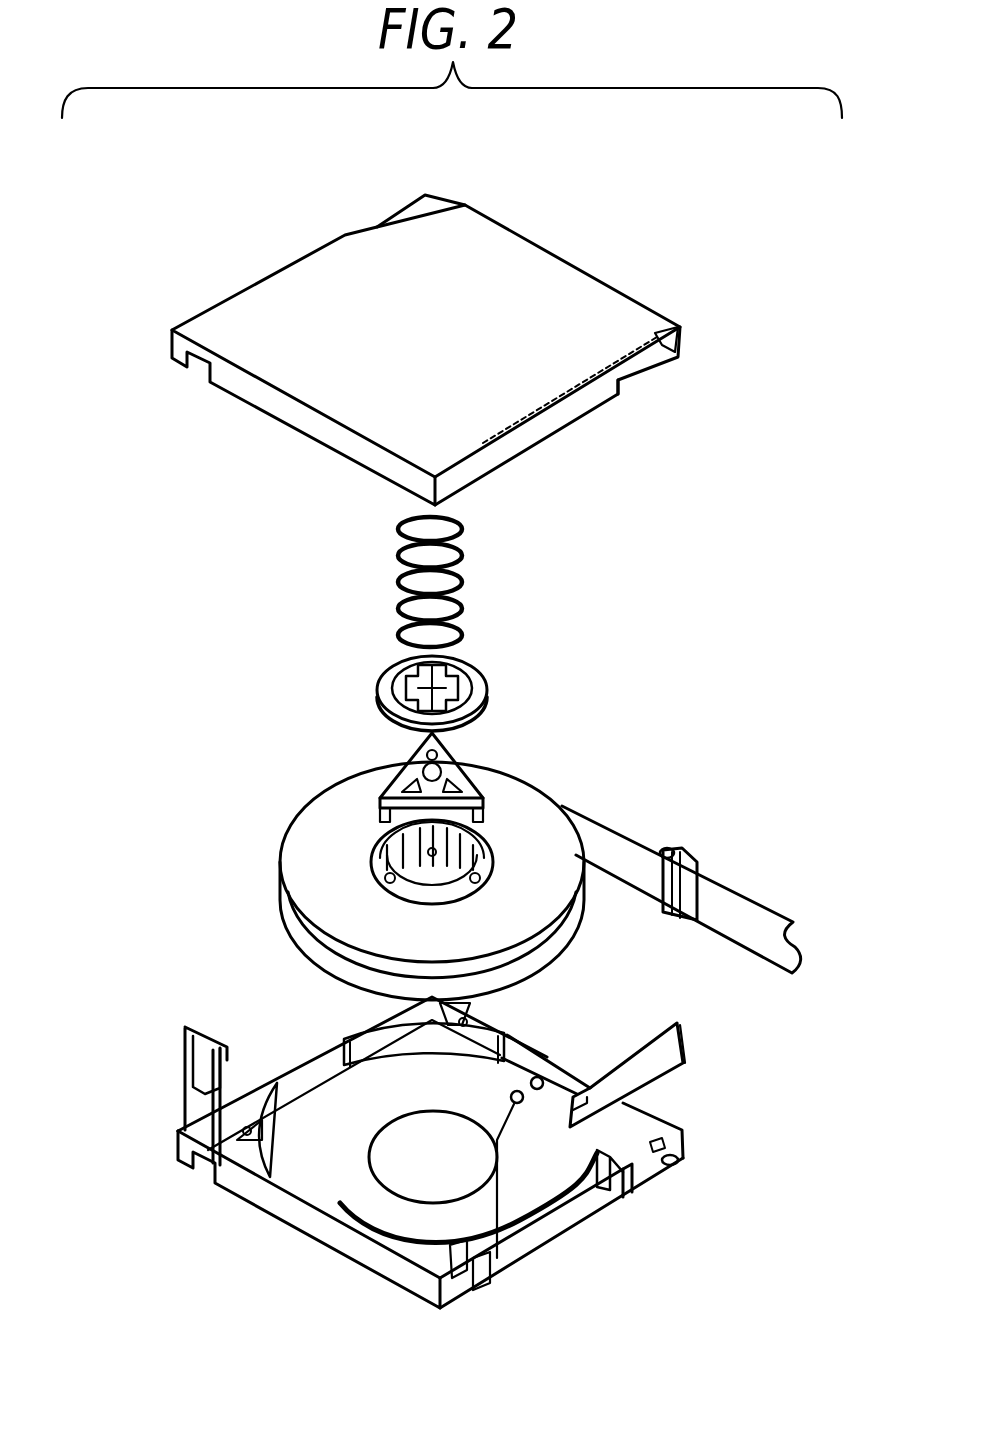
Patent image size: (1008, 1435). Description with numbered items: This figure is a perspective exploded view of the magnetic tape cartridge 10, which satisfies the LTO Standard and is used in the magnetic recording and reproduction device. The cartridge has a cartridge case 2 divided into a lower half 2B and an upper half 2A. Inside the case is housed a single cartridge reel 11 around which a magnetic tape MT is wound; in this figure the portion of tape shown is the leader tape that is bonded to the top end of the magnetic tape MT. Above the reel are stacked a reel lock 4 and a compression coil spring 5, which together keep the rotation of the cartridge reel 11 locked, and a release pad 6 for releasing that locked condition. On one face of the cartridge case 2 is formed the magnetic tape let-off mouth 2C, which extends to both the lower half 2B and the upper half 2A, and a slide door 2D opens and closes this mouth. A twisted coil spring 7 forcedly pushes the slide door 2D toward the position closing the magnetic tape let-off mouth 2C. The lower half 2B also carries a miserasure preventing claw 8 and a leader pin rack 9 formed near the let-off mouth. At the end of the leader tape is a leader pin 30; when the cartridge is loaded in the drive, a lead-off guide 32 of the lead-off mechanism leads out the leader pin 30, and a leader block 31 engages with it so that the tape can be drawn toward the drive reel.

The cartridge case 2 is at (153, 645).
The upper half 2A is at (275, 423).
The lower half 2B is at (300, 1060).
The magnetic tape let-off mouth 2C is at (618, 380).
The slide door 2D is at (663, 1033).
The magnetic tape cartridge 10 is at (513, 215).
The compression coil spring 5 is at (462, 580).
The reel brake hub 4 is at (470, 653).
The release pad 6 is at (455, 749).
The cartridge reel 11 is at (512, 800).
The magnetic tape MT is at (585, 812).
The leader pin 30 is at (668, 848).
The leader block 31 is at (683, 913).
The lead-off guide 32 is at (763, 920).
The twisted coil spring 7 is at (550, 1052).
The miserasure preventing claw 8 is at (210, 1045).
The leader pin rack 9 is at (677, 1165).